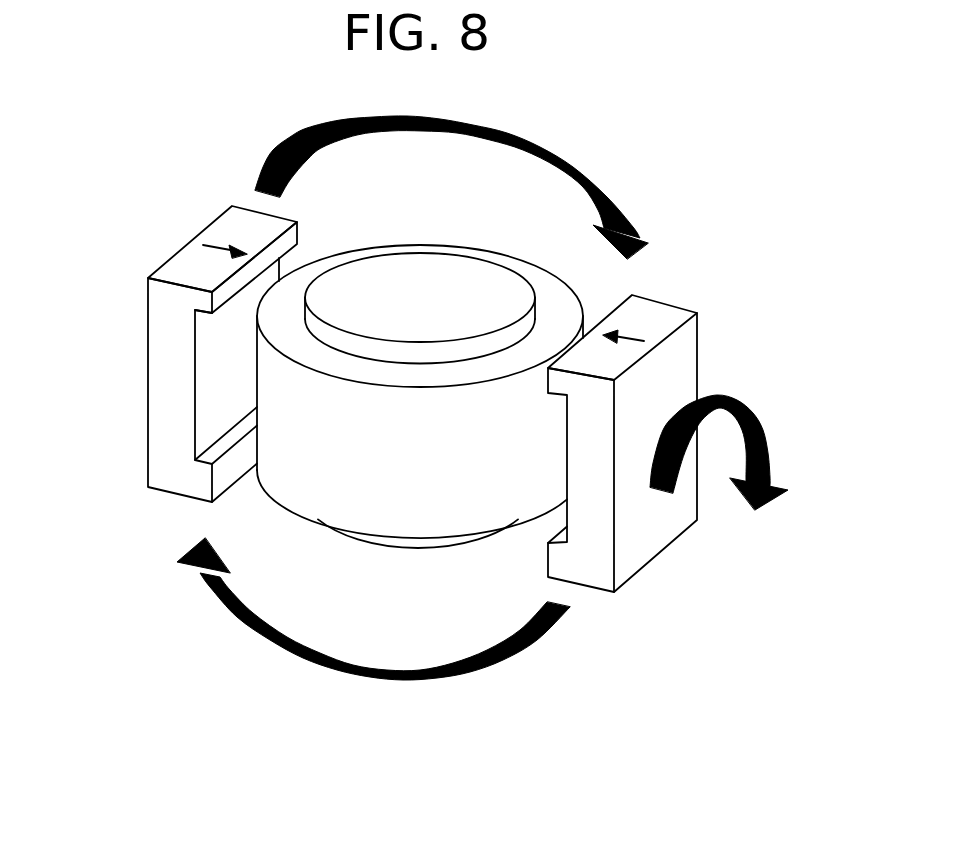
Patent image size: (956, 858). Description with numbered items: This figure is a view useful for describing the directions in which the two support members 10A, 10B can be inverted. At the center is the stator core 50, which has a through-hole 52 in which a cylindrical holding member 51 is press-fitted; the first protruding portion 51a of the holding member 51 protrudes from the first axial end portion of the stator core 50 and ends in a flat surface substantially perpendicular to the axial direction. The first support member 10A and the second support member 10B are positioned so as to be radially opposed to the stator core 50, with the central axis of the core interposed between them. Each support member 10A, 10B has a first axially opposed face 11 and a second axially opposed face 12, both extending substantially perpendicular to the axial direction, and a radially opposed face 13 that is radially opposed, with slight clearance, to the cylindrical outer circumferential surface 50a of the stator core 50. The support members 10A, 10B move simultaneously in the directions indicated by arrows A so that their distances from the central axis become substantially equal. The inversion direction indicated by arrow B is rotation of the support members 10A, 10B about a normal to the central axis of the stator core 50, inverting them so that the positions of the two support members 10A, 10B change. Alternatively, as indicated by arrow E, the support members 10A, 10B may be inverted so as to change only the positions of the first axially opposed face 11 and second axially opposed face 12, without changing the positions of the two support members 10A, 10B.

The first support member 10A is at (178, 384).
The second support member 10B is at (658, 389).
The first axially opposed face 11 is at (211, 316).
The second axially opposed face 12 is at (220, 440).
The radially opposed face 13 is at (217, 377).
The stator core 50 is at (420, 381).
The cylindrical outer circumferential surface 50a is at (443, 490).
The holding member 51 is at (420, 273).
The first protruding portion 51a is at (385, 277).
The through-hole 52 is at (413, 363).
The arrows A is at (209, 246).
The arrow B is at (478, 117).
The arrow E is at (767, 433).